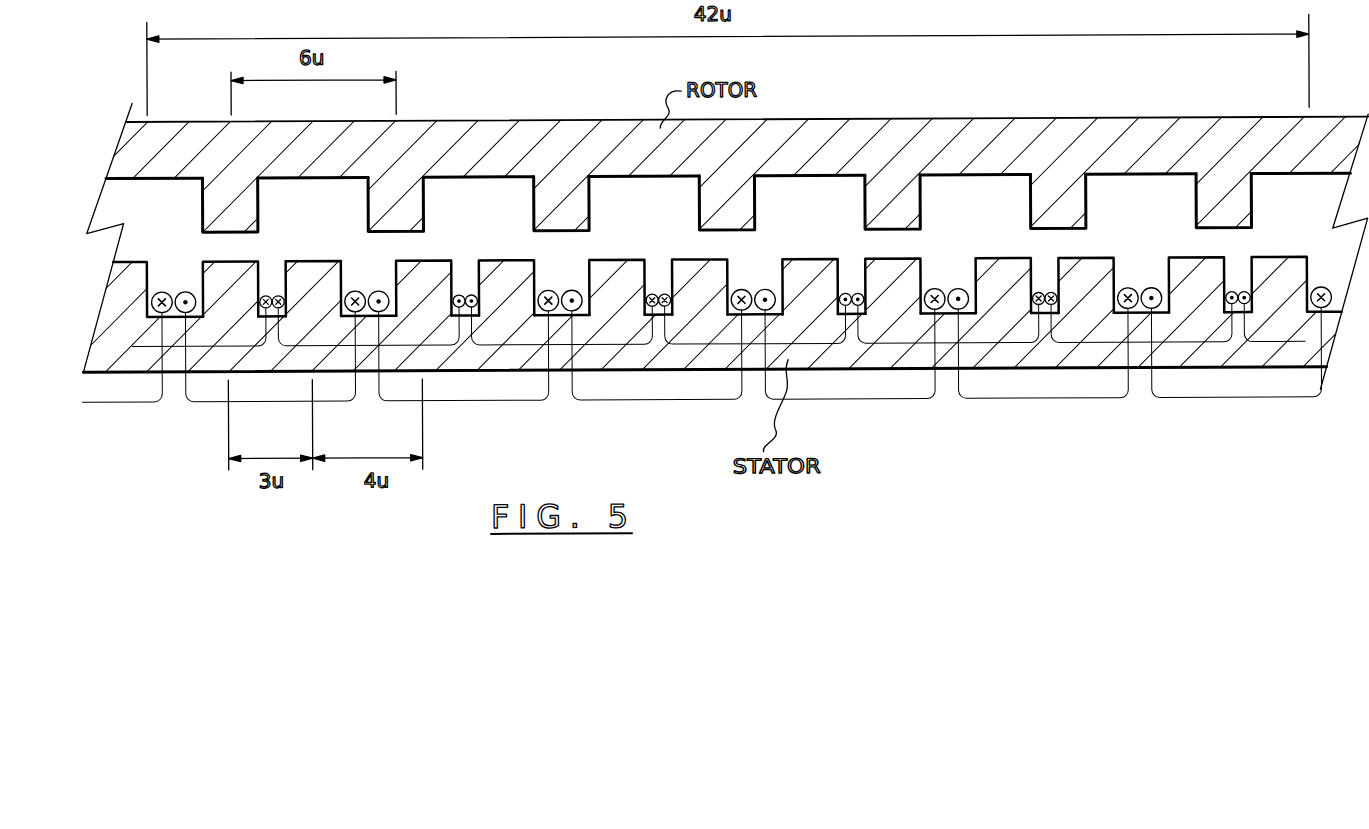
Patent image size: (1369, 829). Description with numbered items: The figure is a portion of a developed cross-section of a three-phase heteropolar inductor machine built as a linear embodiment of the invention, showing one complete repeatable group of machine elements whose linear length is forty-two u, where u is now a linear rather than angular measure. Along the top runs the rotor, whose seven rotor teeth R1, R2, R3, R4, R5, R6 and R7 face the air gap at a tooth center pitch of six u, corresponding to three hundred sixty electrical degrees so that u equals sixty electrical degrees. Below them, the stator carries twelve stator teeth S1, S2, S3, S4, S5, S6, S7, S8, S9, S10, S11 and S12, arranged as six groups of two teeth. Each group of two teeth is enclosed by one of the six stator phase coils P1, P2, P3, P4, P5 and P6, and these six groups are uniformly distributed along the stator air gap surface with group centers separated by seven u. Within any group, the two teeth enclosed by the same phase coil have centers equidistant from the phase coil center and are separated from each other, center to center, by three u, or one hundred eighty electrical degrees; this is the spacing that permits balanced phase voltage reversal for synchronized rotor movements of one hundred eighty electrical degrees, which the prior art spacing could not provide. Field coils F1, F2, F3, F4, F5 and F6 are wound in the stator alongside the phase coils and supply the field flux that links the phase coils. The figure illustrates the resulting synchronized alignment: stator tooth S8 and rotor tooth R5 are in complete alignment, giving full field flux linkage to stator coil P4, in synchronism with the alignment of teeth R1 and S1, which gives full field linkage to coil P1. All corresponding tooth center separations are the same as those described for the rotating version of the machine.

The rotor tooth R1 is at (252, 196).
The rotor tooth R2 is at (418, 196).
The rotor tooth R3 is at (583, 196).
The rotor tooth R4 is at (749, 196).
The rotor tooth R5 is at (915, 196).
The rotor tooth R6 is at (1080, 196).
The rotor tooth R7 is at (1246, 196).
The stator tooth S1 is at (216, 268).
The stator tooth S2 is at (299, 268).
The stator tooth S3 is at (409, 268).
The stator tooth S4 is at (492, 268).
The stator tooth S5 is at (602, 268).
The stator tooth S6 is at (685, 268).
The stator tooth S7 is at (796, 268).
The stator tooth S8 is at (878, 268).
The stator tooth S9 is at (989, 268).
The stator tooth S10 is at (1072, 268).
The stator tooth S11 is at (1182, 268).
The stator tooth S12 is at (1265, 268).
The field coil F1 is at (171, 346).
The field coil F2 is at (364, 346).
The field coil F3 is at (557, 345).
The field coil F4 is at (750, 345).
The field coil F5 is at (940, 345).
The field coil F6 is at (1137, 345).
The stator phase coil P1 is at (253, 400).
The stator phase coil P2 is at (455, 400).
The stator phase coil P3 is at (627, 400).
The stator phase coil P4 is at (830, 400).
The stator phase coil P5 is at (1033, 400).
The stator phase coil P6 is at (1233, 400).